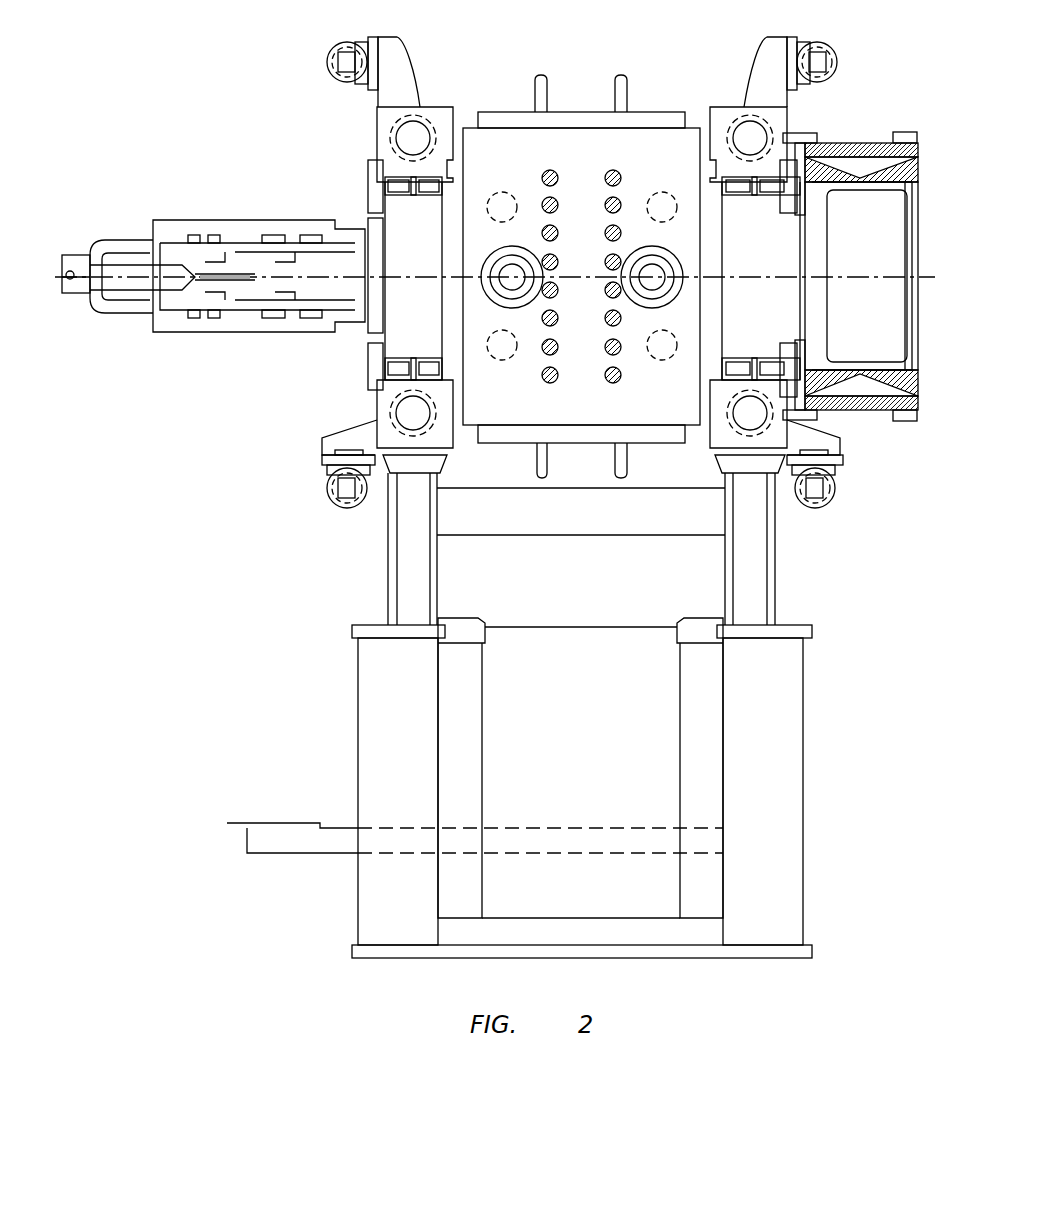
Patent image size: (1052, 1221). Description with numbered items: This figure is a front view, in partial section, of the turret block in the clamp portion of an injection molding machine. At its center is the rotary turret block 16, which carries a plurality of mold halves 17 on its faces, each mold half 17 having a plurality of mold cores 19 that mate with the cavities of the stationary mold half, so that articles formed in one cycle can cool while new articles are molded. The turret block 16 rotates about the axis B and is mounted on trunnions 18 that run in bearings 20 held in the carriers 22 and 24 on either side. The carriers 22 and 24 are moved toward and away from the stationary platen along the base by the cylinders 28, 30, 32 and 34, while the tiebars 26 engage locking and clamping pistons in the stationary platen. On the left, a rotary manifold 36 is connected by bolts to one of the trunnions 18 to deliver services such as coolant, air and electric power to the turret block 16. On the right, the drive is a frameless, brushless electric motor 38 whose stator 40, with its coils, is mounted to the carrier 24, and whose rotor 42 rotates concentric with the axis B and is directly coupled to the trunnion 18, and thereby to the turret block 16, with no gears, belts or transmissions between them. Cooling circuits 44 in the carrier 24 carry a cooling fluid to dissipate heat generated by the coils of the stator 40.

The rotary turret block 16 is at (510, 95).
The mold half 17 is at (651, 147).
The trunnion 18 is at (428, 326).
The mold core 19 is at (615, 82).
The bearing 20 is at (427, 193).
The carrier 22 is at (380, 135).
The carrier 24 is at (780, 120).
The tiebar 26 is at (413, 138).
The cylinder 28 is at (347, 47).
The cylinder 30 is at (820, 52).
The cylinder 32 is at (338, 505).
The cylinder 34 is at (830, 500).
The rotary manifold 36 is at (250, 300).
The frameless brushless electric motor 38 is at (884, 320).
The stator 40 is at (860, 170).
The rotor 42 is at (825, 185).
The cooling circuit 44 is at (800, 150).
The rotation axis B is at (740, 278).